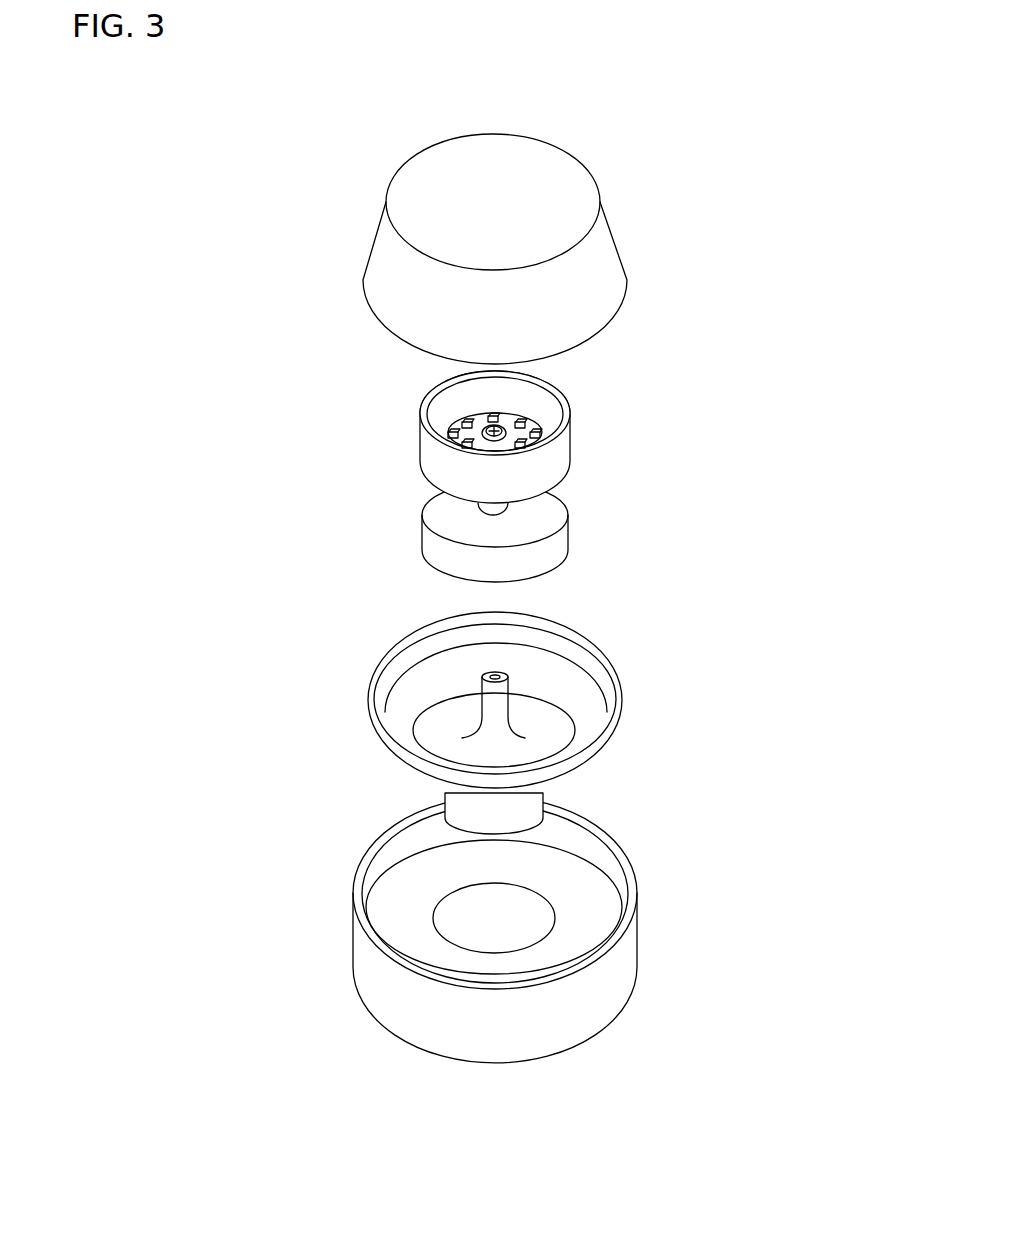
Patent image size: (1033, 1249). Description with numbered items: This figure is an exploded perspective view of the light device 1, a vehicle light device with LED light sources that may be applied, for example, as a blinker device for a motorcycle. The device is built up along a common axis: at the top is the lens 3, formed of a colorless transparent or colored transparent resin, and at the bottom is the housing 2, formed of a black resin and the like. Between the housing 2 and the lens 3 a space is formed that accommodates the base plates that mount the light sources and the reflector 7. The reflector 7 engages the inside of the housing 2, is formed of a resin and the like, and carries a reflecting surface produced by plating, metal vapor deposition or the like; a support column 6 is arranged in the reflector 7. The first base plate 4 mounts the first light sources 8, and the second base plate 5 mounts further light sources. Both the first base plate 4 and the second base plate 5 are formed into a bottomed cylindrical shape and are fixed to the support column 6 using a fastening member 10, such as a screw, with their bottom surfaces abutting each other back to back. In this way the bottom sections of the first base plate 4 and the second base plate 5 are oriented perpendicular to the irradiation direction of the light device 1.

The light device 1 is at (262, 313).
The housing 2 is at (592, 1010).
The lens 3 is at (541, 162).
The first base plate 4 is at (557, 455).
The second base plate 5 is at (557, 538).
The support column 6 is at (487, 688).
The reflector 7 is at (553, 687).
The first light sources 8 is at (497, 415).
The fastening member 10 is at (500, 424).